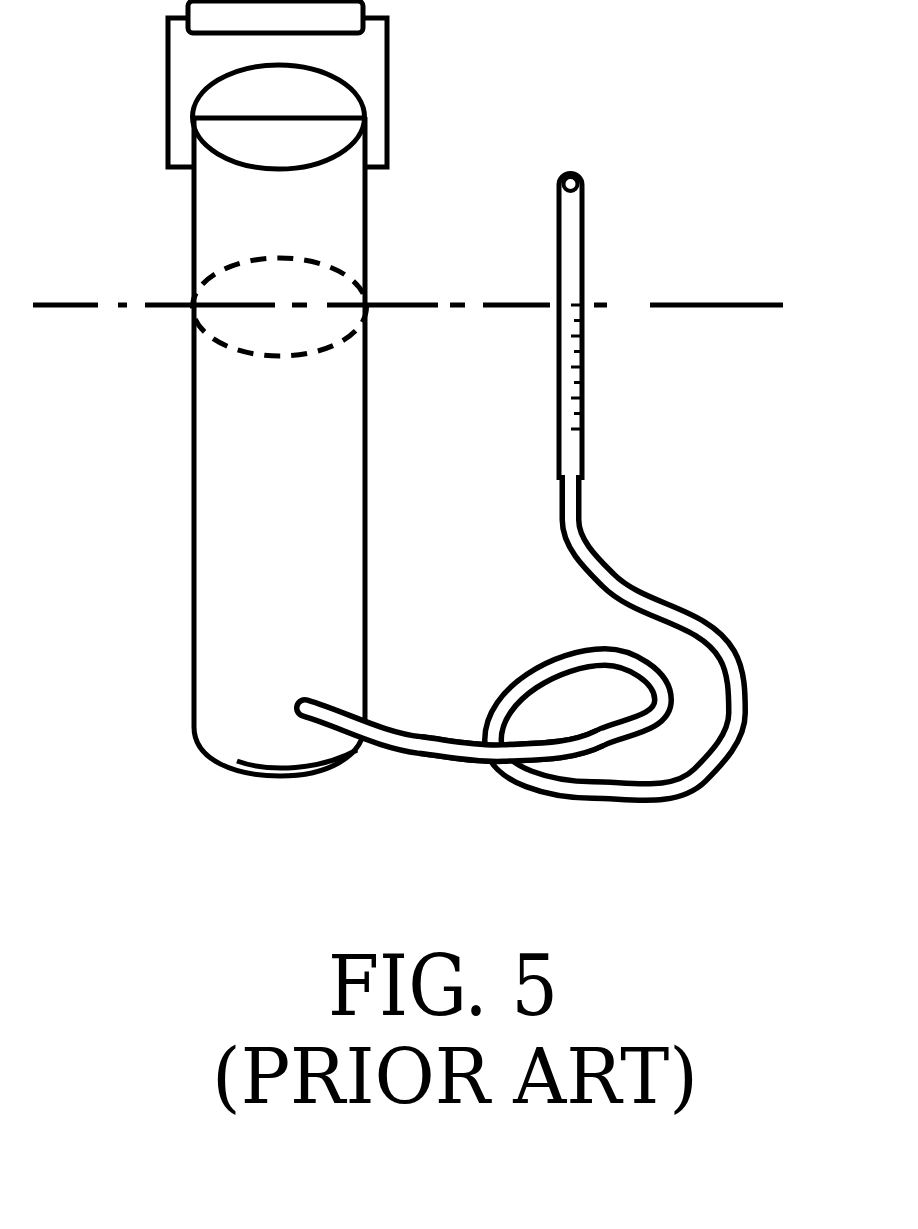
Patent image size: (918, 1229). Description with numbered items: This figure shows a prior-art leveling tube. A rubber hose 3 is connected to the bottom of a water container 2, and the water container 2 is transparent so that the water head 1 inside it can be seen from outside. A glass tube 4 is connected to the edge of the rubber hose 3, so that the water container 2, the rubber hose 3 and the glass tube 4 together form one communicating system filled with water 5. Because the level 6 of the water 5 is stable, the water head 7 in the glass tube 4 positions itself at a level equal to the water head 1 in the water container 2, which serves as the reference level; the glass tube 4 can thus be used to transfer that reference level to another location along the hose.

The water head 1 is at (265, 258).
The water container 2 is at (194, 607).
The rubber hose 3 is at (679, 598).
The glass tube 4 is at (583, 233).
The water 5 is at (222, 480).
The level 6 is at (507, 303).
The water head 7 is at (582, 300).